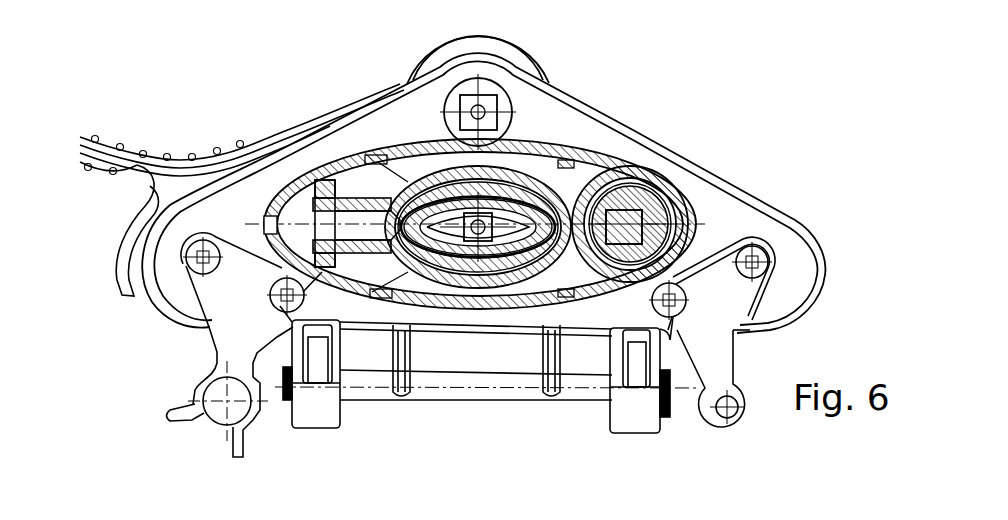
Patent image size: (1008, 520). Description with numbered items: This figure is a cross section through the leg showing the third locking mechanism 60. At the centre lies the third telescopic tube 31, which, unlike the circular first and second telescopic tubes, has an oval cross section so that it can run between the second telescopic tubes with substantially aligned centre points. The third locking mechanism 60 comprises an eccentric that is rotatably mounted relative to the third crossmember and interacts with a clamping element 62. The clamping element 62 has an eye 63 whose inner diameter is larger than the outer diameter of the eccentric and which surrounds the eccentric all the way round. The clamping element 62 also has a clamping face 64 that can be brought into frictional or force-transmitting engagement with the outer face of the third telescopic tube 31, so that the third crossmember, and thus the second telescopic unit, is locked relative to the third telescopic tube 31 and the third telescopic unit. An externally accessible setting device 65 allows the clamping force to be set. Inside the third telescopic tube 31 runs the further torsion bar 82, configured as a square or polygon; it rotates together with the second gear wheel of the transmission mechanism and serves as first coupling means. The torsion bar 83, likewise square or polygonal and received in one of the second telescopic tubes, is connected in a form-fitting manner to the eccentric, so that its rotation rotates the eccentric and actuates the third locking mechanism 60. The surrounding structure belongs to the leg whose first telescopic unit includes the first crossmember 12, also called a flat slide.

The first crossmember 12 is at (790, 240).
The third telescopic tube 31 is at (553, 230).
The third locking mechanism 60 is at (738, 165).
The clamping element 62 is at (565, 242).
The eye 63 is at (630, 182).
The clamping face 64 is at (475, 272).
The setting device 65 is at (305, 225).
The further torsion bar 82 is at (505, 214).
The torsion bar 83 is at (629, 180).